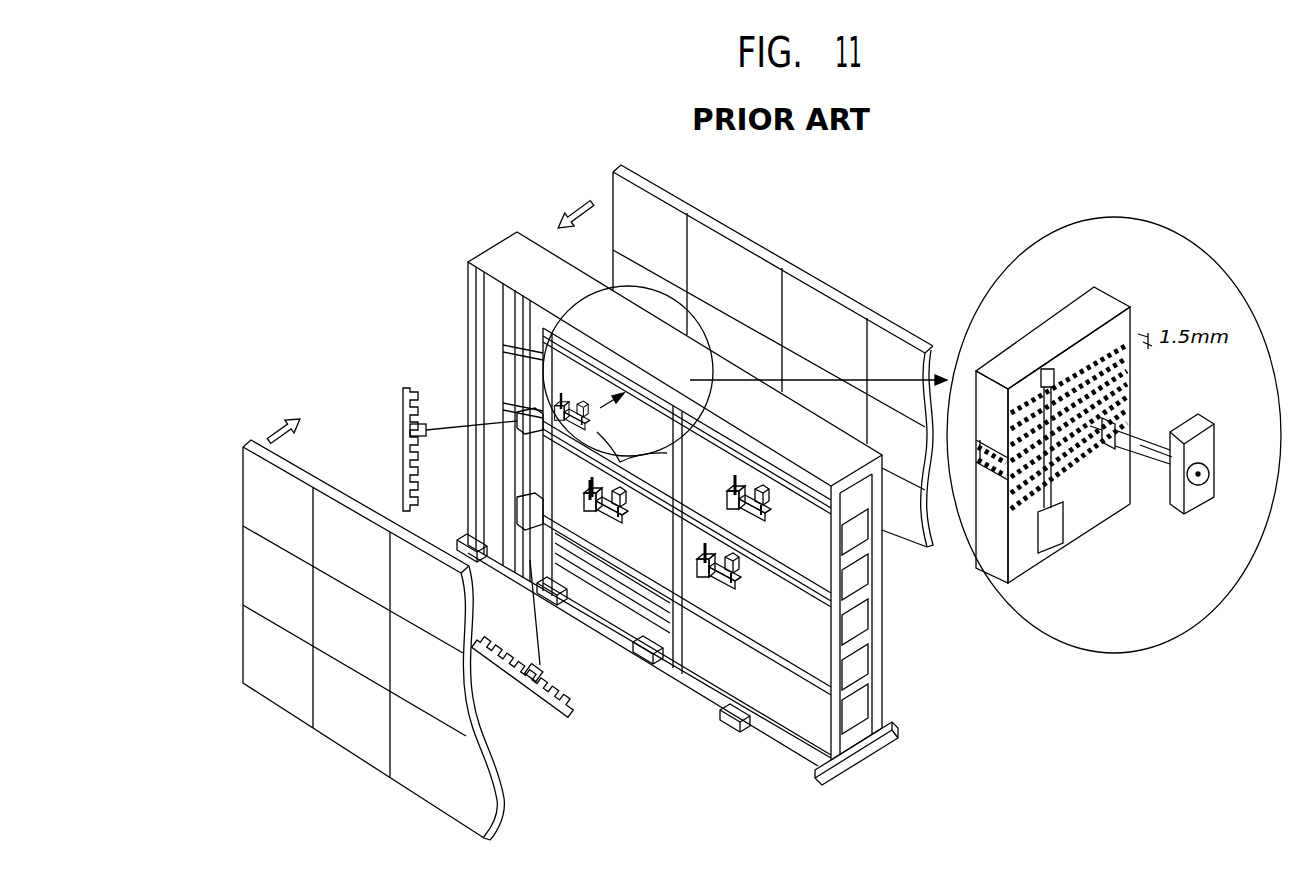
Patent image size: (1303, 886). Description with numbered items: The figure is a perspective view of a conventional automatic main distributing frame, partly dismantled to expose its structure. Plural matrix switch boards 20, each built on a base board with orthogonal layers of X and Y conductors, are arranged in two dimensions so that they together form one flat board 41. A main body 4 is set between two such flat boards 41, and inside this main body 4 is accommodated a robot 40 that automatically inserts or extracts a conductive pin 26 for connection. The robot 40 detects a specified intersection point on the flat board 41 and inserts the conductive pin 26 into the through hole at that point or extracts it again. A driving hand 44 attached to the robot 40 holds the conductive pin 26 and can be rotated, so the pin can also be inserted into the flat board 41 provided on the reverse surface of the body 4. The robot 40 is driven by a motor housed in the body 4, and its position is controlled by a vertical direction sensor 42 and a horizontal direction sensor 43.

The main body 4 is at (865, 735).
The matrix switch board 20 is at (673, 198).
The conductive pin 26 is at (1098, 462).
The robot 40 is at (737, 595).
The flat board 41 is at (366, 637).
The vertical direction sensor 42 is at (420, 432).
The horizontal direction sensor 43 is at (507, 683).
The driving hand 44 is at (588, 528).